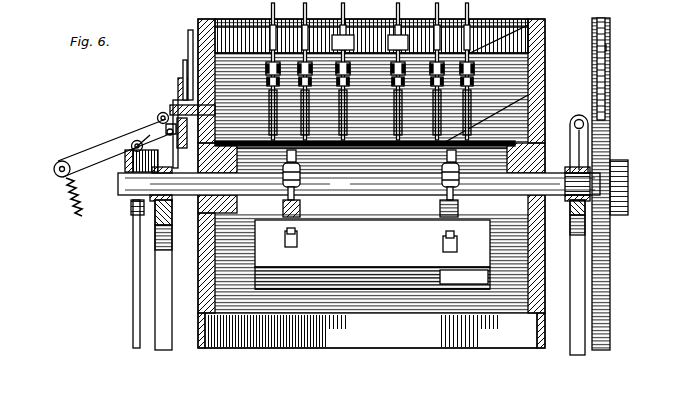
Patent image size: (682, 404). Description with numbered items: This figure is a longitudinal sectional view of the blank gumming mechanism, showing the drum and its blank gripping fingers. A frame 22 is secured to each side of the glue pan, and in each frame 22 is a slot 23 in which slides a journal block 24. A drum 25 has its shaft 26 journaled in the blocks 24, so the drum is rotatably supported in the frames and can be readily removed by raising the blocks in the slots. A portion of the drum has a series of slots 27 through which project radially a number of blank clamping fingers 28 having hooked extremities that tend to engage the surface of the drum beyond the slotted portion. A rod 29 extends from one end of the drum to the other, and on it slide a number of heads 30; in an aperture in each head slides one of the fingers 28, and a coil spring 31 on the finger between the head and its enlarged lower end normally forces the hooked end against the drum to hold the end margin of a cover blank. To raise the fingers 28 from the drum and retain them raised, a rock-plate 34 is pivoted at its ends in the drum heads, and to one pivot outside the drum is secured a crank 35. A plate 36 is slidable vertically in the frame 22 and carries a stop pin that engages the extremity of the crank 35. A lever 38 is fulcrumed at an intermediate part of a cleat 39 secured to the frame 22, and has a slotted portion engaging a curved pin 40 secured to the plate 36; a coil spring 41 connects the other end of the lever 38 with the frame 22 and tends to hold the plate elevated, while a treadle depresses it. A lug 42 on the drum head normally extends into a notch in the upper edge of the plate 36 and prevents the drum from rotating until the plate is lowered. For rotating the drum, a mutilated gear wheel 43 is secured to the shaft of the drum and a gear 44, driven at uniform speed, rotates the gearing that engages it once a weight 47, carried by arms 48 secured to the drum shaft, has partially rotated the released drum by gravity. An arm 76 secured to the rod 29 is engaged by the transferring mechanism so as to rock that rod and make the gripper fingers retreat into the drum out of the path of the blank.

The frame 22 is at (574, 297).
The slot 23 is at (573, 159).
The journal block 24 is at (131, 205).
The drum 25 is at (197, 238).
The shaft 26 is at (203, 191).
The slots 27 is at (230, 22).
The blank clamping fingers 28 is at (345, 15).
The rod 29 is at (546, 73).
The heads 30 is at (532, 26).
The coil spring 31 is at (546, 101).
The rock-plate 34 is at (576, 121).
The crank 35 is at (180, 88).
The plate 36 is at (167, 123).
The lever 38 is at (95, 152).
The cleat 39 is at (125, 161).
The curved pin 40 is at (158, 114).
The coil spring 41 is at (63, 197).
The lug 42 is at (184, 72).
The mutilated gear wheel 43 is at (608, 148).
The gear 44 is at (620, 213).
The weight 47 is at (372, 254).
The arms 48 is at (302, 218).
The arm 76 is at (187, 46).